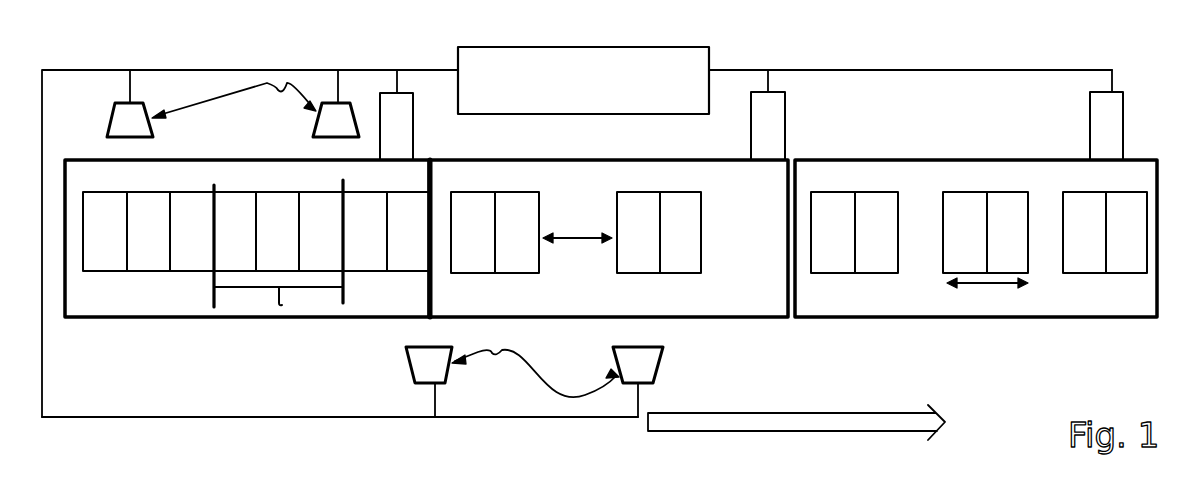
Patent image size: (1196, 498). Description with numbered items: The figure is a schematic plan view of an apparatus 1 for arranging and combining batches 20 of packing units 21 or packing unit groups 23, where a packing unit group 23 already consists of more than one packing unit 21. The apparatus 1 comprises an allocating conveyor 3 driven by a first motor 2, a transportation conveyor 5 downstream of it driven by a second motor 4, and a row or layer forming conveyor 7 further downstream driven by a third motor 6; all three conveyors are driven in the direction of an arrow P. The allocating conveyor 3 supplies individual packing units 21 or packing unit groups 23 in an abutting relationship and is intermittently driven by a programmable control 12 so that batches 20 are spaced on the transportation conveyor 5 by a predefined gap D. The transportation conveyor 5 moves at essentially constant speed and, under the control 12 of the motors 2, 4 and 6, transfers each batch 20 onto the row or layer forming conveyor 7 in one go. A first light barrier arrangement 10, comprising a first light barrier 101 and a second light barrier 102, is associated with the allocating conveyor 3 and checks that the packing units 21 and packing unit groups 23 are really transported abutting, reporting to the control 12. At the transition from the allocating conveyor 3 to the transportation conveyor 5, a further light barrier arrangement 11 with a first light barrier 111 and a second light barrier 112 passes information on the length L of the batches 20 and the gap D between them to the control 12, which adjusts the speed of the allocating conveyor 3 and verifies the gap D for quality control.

The apparatus 1 is at (714, 342).
The first motor 2 is at (441, 106).
The allocating conveyor 3 is at (243, 317).
The second motor 4 is at (773, 118).
The transportation conveyor 5 is at (588, 317).
The third motor 6 is at (1105, 118).
The row or layer forming conveyor 7 is at (950, 317).
The first light barrier arrangement 10 is at (234, 107).
The first light barrier 101 is at (128, 118).
The second light barrier 102 is at (340, 120).
The further light barrier arrangement 11 is at (493, 355).
The first light barrier 111 is at (420, 368).
The second light barrier 112 is at (667, 373).
The programmable control 12 is at (601, 97).
The batch 20 is at (488, 273).
The packing unit 21 is at (183, 271).
The packing unit group 23 is at (315, 287).
The gap D is at (578, 240).
The length L is at (1000, 283).
The arrow P is at (793, 422).